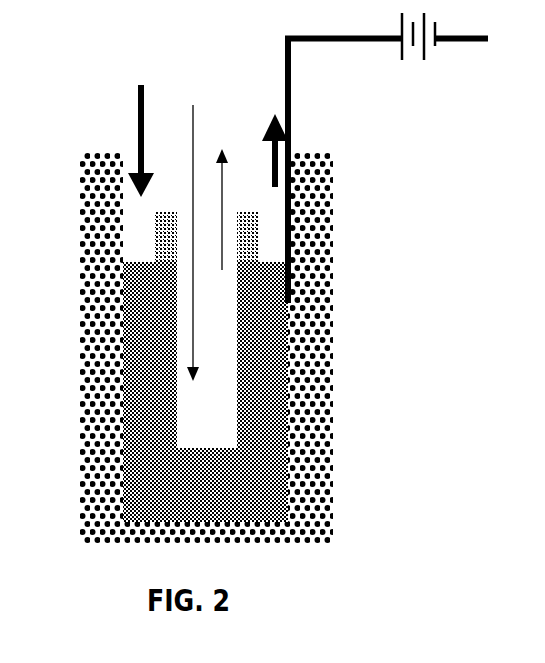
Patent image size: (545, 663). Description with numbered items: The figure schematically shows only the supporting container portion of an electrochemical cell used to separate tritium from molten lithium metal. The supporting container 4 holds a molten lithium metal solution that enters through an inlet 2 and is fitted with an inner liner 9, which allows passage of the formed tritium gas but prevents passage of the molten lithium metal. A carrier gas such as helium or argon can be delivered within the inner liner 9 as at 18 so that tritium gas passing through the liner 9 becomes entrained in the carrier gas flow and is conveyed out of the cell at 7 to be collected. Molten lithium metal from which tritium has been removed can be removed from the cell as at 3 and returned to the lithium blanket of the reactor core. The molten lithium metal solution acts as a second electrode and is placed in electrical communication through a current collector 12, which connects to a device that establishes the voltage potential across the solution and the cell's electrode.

The inlet 2 is at (137, 126).
The carrier gas delivery 18 is at (192, 130).
The tritium gas collection outlet 7 is at (230, 200).
The lithium removal outlet 3 is at (290, 152).
The inner liner 9 is at (255, 240).
The supporting container 4 is at (333, 284).
The current collector 12 is at (337, 42).